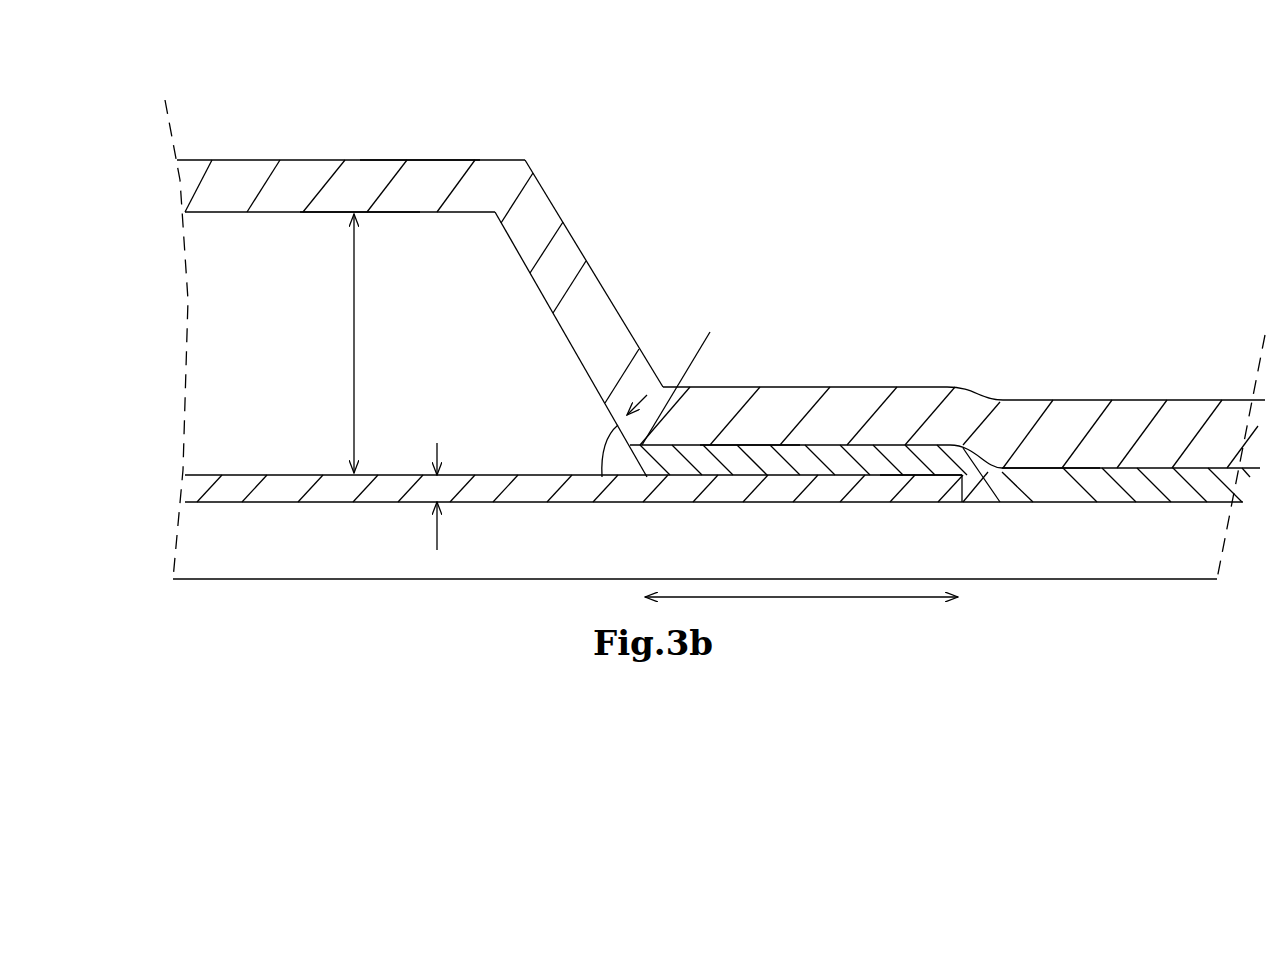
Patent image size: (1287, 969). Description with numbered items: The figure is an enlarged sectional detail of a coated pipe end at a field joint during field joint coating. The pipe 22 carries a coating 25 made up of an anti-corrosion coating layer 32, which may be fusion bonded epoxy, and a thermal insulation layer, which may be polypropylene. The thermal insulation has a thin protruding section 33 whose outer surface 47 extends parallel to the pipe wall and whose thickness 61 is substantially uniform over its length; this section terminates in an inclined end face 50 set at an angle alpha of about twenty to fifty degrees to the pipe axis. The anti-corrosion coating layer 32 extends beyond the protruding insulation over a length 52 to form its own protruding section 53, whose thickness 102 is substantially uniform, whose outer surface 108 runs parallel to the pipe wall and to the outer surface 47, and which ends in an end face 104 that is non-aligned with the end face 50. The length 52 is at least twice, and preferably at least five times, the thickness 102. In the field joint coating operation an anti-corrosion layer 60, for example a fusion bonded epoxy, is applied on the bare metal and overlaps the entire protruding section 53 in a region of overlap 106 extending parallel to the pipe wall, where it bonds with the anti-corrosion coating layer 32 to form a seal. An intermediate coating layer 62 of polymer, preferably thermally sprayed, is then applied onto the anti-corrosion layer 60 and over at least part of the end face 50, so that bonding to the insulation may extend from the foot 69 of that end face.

The pipe 22 is at (215, 535).
The coating 25 is at (462, 110).
The anti-corrosion coating layer 32 is at (277, 492).
The protruding section of the thermal insulation layer 33 is at (360, 165).
The outer surface of the protruding section 47 is at (215, 212).
The inclined end face of the protruding section 50 is at (580, 350).
The length of the protruding section of the anti-corrosion coating layer 52 is at (825, 603).
The protruding section of the anti-corrosion coating layer 53 is at (783, 487).
The anti-corrosion layer 60 is at (918, 450).
The thickness of the protruding section 61 is at (418, 171).
The intermediate coating layer 62 is at (570, 257).
The foot of the end face 69 is at (682, 378).
The thickness of the anti-corrosion coating layer 102 is at (420, 507).
The end face of the protruding section of the anti-corrosion coating layer 104 is at (1000, 468).
The region of overlap 106 is at (861, 383).
The outer surface of the protruding section of the anti-corrosion coating layer 108 is at (745, 470).
The angle alpha is at (603, 447).